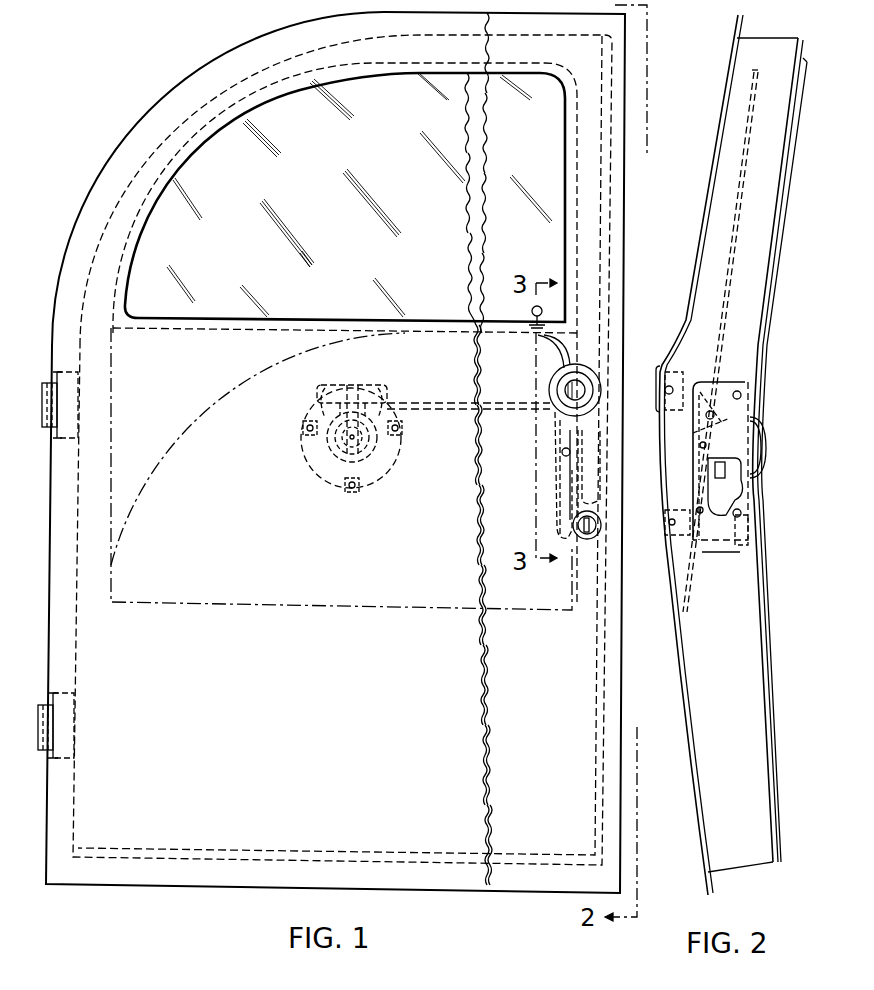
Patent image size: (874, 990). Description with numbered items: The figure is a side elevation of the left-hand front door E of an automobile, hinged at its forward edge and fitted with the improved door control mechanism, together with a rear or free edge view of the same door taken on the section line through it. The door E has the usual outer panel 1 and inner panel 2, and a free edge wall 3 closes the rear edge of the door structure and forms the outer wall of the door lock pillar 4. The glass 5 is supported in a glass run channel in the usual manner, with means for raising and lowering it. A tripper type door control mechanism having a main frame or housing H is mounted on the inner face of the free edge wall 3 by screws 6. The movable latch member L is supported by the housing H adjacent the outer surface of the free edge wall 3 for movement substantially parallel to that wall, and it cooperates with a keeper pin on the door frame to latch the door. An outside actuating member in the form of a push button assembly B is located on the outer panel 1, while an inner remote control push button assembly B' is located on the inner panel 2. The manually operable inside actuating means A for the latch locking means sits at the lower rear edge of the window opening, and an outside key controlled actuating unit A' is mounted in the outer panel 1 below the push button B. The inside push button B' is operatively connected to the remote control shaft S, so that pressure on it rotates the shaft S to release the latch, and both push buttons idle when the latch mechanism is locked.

In FIG. 1, the outer panel 1 is at (213, 686).
In FIG. 2, the outer panel 1 is at (679, 707).
In FIG. 2, the inner panel 2 is at (761, 719).
In FIG. 2, the free edge wall 3 is at (738, 656).
In FIG. 1, the door lock pillar 4 is at (597, 222).
In FIG. 1, the glass 5 is at (415, 253).
In FIG. 2, the screws 6 is at (742, 396).
In FIG. 1, the inside actuating means A is at (521, 313).
In FIG. 1, the outside key controlled actuating unit A' is at (587, 547).
In FIG. 2, the outside key controlled actuating unit A' is at (662, 537).
In FIG. 1, the push button assembly B is at (589, 371).
In FIG. 2, the push button assembly B is at (658, 405).
In FIG. 1, the push button assembly B' is at (337, 438).
In FIG. 2, the push button assembly B' is at (771, 451).
In FIG. 1, the door E is at (208, 63).
In FIG. 1, the main frame or housing H is at (572, 482).
In FIG. 2, the latch member L is at (707, 490).
In FIG. 1, the remote control shaft S is at (432, 404).